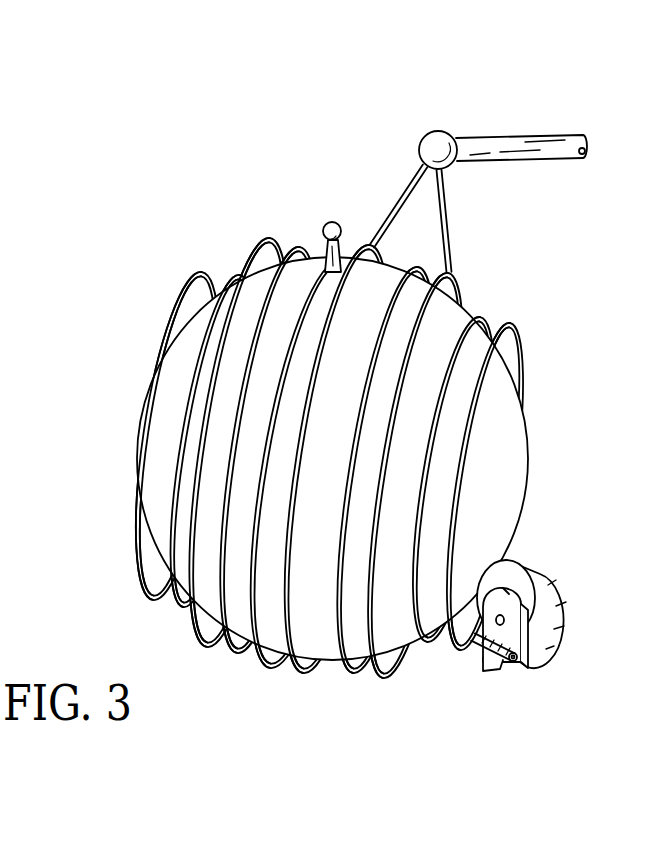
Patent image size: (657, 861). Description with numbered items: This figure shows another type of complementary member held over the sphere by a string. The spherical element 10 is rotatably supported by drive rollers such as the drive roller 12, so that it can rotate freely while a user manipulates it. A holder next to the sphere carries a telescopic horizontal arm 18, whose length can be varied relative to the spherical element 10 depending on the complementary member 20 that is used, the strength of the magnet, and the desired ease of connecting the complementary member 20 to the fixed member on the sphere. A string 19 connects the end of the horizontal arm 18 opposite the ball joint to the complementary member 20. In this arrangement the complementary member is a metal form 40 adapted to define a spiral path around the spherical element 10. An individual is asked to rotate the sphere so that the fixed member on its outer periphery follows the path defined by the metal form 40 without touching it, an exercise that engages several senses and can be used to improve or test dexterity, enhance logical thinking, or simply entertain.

The spherical element 10 is at (507, 452).
The drive roller 12 is at (547, 565).
The telescopic horizontal arm 18 is at (513, 155).
The string 19 is at (402, 202).
The complementary member 20 is at (0, 395).
The metal form 40 is at (264, 241).